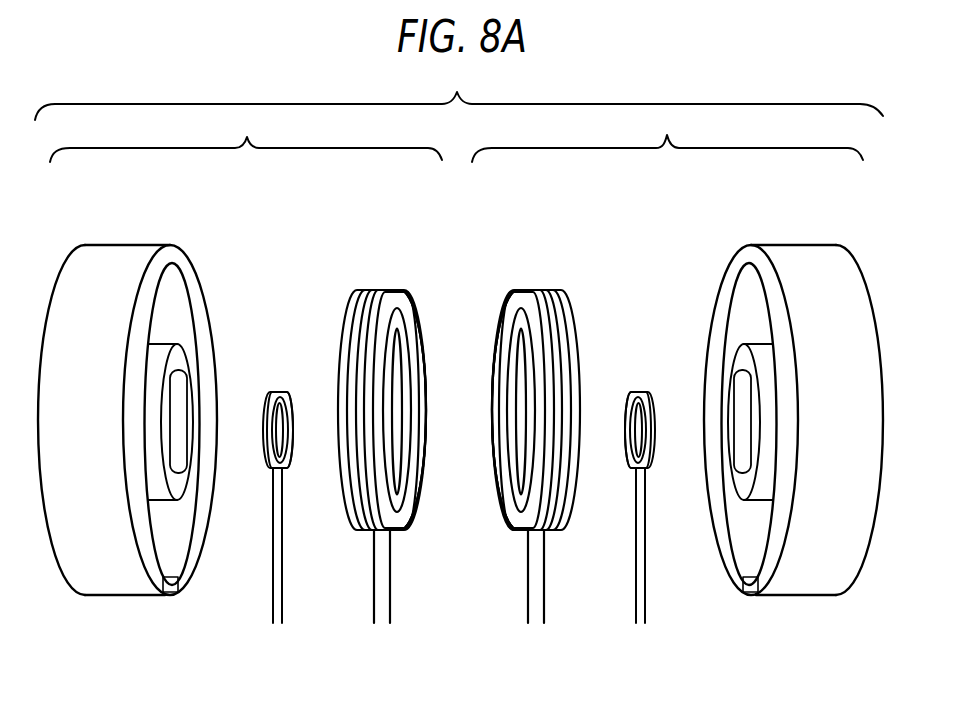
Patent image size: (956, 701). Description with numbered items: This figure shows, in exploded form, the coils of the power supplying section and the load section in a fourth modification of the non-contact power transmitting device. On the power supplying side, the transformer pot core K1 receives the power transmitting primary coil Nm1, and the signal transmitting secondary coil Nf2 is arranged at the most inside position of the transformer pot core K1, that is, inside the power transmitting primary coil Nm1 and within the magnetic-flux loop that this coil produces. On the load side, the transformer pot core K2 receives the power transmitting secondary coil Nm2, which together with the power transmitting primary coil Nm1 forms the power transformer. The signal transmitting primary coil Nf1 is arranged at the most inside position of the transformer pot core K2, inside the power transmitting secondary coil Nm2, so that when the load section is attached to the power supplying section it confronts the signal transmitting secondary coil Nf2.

The transformer pot core K1 is at (103, 245).
The transformer pot core K2 is at (813, 245).
The power transmitting primary coil Nm1 is at (379, 290).
The power transmitting secondary coil Nm2 is at (540, 290).
The signal transmitting primary coil Nf1 is at (643, 392).
The signal transmitting secondary coil Nf2 is at (274, 392).